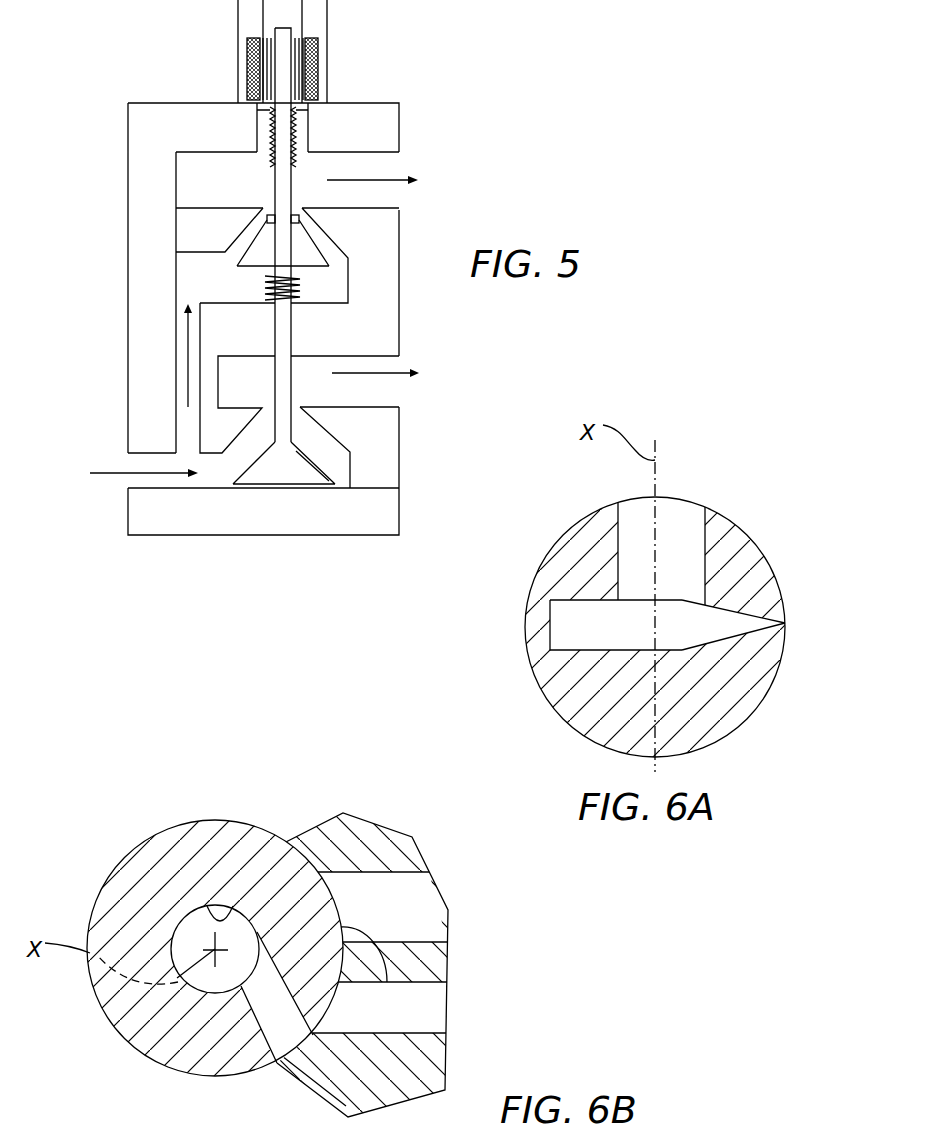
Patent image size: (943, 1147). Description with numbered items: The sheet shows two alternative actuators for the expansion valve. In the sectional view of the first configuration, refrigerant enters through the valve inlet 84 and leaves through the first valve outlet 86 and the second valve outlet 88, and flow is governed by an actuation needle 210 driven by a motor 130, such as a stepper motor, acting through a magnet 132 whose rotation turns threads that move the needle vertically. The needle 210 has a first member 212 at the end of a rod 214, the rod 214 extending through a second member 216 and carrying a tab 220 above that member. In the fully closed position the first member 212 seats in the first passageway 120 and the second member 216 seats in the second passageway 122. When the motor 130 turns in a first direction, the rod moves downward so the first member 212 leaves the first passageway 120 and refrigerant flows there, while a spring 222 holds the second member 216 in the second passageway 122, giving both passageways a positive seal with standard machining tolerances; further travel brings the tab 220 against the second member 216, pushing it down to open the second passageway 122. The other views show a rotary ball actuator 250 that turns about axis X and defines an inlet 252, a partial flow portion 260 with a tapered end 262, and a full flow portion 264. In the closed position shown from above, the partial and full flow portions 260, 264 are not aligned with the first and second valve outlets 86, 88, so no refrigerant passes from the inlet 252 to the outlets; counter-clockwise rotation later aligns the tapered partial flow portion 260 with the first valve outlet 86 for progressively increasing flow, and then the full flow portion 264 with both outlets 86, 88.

In FIG. 5, the valve inlet 84 is at (133, 455).
In FIG. 5, the first valve outlet 86 is at (388, 407).
In FIG. 6B, the first valve outlet 86 is at (418, 1033).
In FIG. 5, the second valve outlet 88 is at (400, 155).
In FIG. 6B, the second valve outlet 88 is at (405, 876).
In FIG. 5, the first passageway 120 is at (260, 412).
In FIG. 5, the second passageway 122 is at (262, 208).
In FIG. 5, the motor 130 is at (315, 50).
In FIG. 5, the magnet 132 is at (260, 38).
In FIG. 5, the actuation needle 210 is at (292, 323).
In FIG. 5, the first member 212 is at (252, 458).
In FIG. 5, the rod 214 is at (292, 385).
In FIG. 5, the second member 216 is at (253, 247).
In FIG. 5, the tab 220 is at (300, 218).
In FIG. 5, the spring 222 is at (265, 292).
In FIG. 6A, the rotary ball actuator 250 is at (560, 543).
In FIG. 6B, the rotary ball actuator 250 is at (153, 837).
In FIG. 6A, the inlet 252 is at (700, 533).
In FIG. 6B, the inlet 252 is at (233, 908).
In FIG. 6A, the partial flow portion 260 is at (733, 613).
In FIG. 6B, the partial flow portion 260 is at (262, 1012).
In FIG. 6A, the tapered end 262 is at (785, 623).
In FIG. 6A, the full flow portion 264 is at (620, 650).
In FIG. 6B, the full flow portion 264 is at (188, 1015).